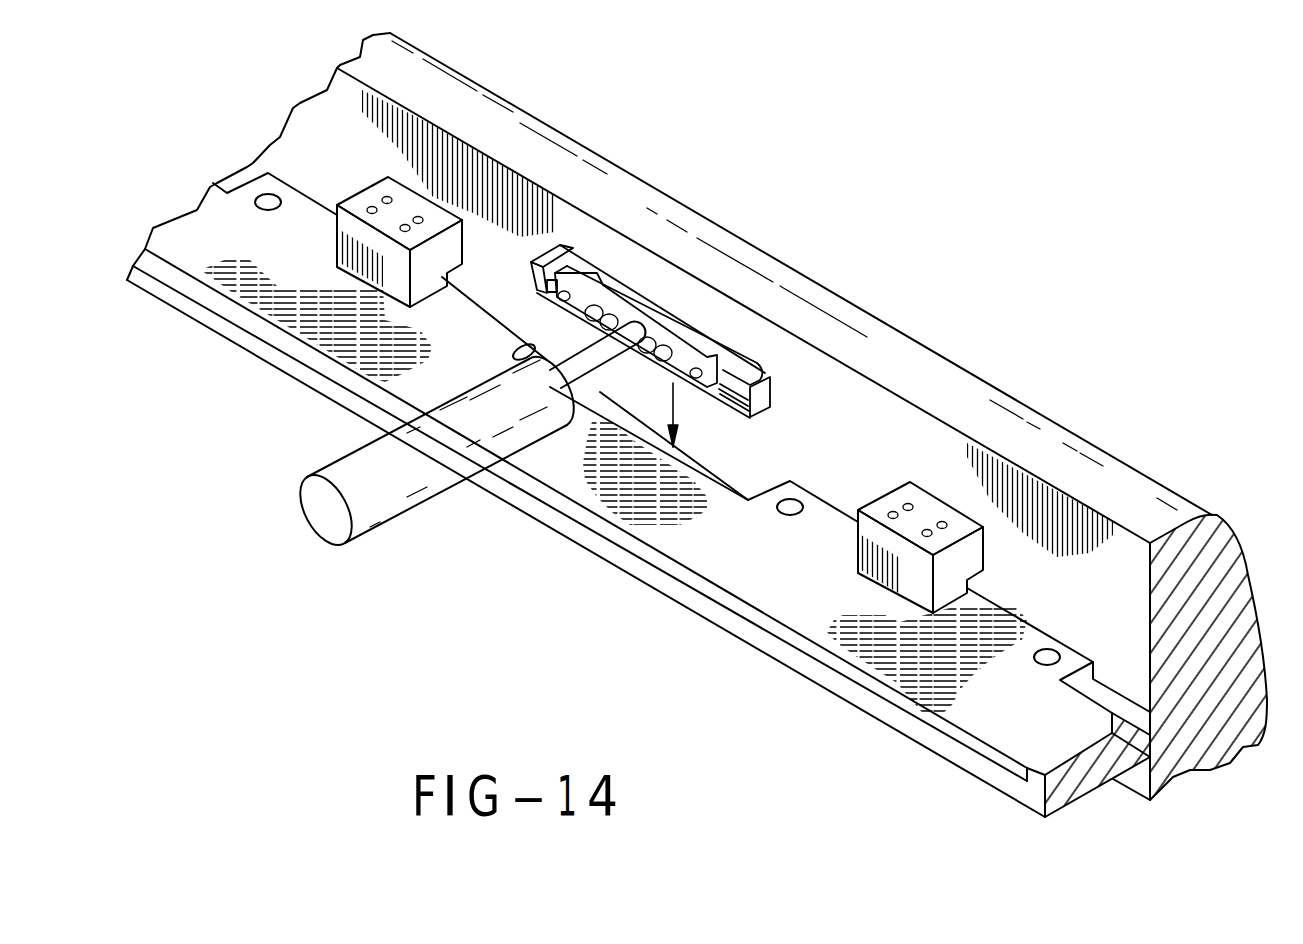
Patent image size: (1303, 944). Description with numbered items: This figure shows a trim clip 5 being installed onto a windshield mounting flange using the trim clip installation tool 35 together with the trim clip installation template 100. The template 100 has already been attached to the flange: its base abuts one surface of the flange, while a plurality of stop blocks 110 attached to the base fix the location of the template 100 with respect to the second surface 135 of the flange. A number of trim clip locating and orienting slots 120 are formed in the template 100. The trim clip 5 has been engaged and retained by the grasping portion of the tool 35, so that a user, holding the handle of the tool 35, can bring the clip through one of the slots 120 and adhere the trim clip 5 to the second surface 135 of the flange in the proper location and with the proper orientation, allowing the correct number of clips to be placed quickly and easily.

The trim clip 5 is at (787, 367).
The trim clip installation tool 35 is at (450, 510).
The template 100 is at (715, 588).
The stop blocks 110 is at (933, 510).
The trim clip locating and orienting slots 120 is at (740, 485).
The second surface 135 is at (890, 423).